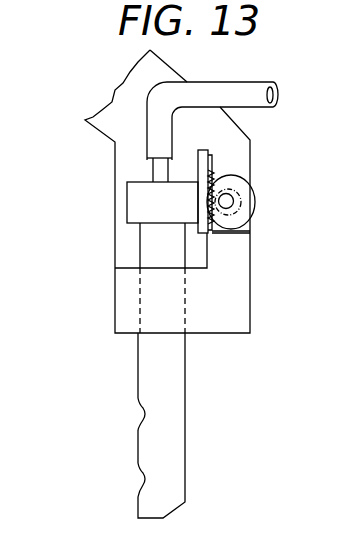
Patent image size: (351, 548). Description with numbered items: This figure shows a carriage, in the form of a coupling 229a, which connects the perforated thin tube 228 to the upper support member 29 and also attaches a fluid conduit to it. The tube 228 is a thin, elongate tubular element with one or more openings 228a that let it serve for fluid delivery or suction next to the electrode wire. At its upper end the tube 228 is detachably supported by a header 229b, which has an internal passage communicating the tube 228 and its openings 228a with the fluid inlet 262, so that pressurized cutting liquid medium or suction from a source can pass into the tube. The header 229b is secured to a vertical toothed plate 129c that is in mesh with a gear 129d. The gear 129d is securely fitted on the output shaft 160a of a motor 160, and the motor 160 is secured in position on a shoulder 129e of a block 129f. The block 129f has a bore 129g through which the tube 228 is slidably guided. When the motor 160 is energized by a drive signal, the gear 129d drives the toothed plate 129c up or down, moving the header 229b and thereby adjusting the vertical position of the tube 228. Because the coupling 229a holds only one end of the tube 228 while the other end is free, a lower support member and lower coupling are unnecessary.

The support member 29 is at (168, 76).
The fluid inlet 262 is at (244, 88).
The vertical toothed plate 129c is at (213, 152).
The gear 129d is at (238, 190).
The motor 160 is at (234, 202).
The output shaft 160a is at (240, 211).
The shoulder 129e is at (228, 234).
The coupling 229a is at (102, 225).
The header 229b is at (127, 188).
The block 129f is at (117, 295).
The bore 129g is at (176, 297).
The perforated thin tube 228 is at (182, 435).
The openings 228a is at (139, 412).